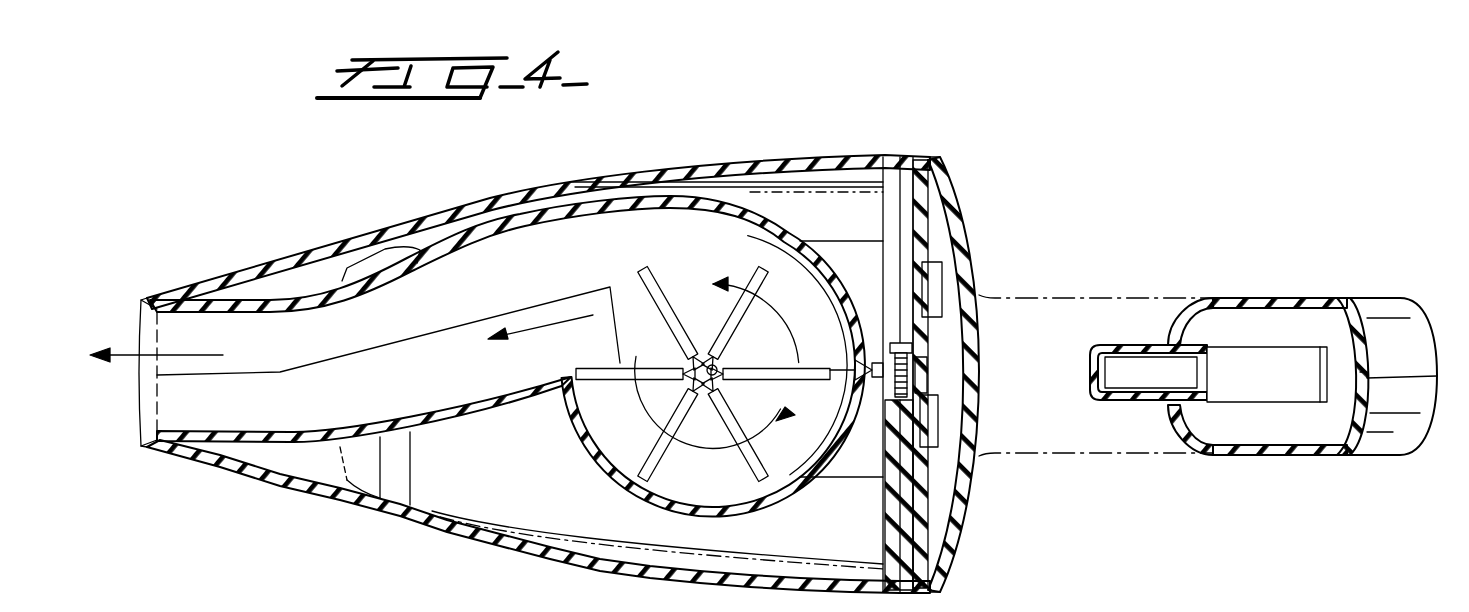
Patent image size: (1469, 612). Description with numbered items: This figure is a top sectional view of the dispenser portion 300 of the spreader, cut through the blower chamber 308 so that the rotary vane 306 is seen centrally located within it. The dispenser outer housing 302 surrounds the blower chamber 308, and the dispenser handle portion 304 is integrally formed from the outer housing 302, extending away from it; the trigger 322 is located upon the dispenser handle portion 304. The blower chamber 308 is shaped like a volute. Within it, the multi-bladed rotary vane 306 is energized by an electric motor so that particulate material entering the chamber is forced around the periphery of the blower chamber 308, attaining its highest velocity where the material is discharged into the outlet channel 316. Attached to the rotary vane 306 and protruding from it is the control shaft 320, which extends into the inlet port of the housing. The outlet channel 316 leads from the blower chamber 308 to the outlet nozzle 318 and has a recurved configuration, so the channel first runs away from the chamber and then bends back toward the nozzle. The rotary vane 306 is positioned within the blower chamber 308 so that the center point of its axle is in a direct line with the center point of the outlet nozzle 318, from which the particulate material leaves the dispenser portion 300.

The dispenser portion 300 is at (405, 200).
The dispenser outer housing 302 is at (945, 166).
The dispenser handle portion 304 is at (1363, 305).
The rotary vane 306 is at (656, 282).
The blower chamber 308 is at (507, 313).
The outlet channel 316 is at (300, 398).
The outlet nozzle 318 is at (140, 318).
The control shaft 320 is at (720, 363).
The trigger 322 is at (697, 360).